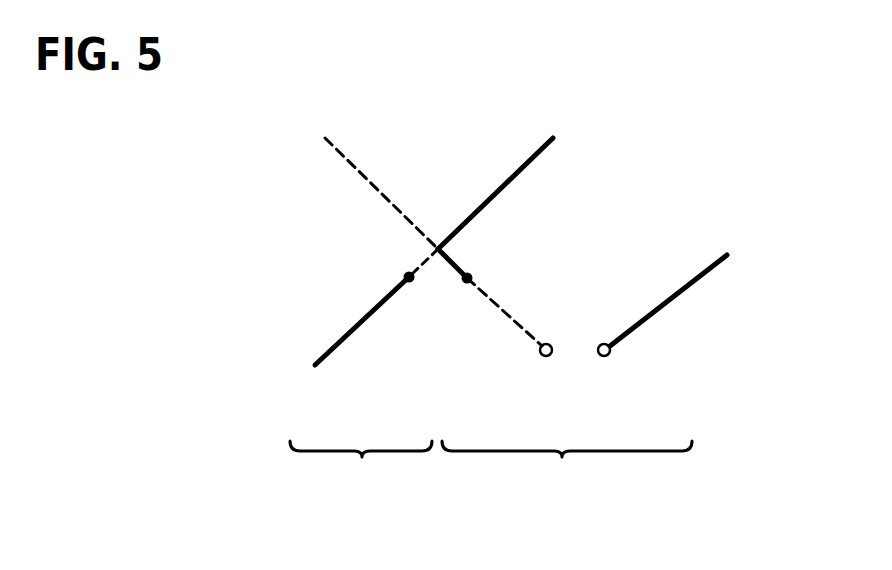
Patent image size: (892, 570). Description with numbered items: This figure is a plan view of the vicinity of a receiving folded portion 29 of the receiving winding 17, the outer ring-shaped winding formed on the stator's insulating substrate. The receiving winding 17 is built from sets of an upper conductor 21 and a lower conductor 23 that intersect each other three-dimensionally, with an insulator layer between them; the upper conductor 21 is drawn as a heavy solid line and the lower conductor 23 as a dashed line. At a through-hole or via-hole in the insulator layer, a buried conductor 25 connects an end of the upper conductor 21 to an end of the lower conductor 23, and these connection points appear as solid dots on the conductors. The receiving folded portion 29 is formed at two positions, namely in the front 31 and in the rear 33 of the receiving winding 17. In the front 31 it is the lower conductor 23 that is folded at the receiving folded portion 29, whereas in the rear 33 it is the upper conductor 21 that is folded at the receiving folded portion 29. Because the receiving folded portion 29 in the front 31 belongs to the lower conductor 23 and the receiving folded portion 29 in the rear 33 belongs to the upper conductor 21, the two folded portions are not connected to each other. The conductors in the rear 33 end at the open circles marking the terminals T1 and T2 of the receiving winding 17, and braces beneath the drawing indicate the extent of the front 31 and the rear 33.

The receiving winding 17 is at (731, 100).
The upper conductor 21 is at (516, 171).
The lower conductor 23 is at (352, 166).
The buried conductor 25 is at (403, 277).
The receiving folded portion 29 is at (438, 250).
The terminal T1 is at (548, 357).
The terminal T2 is at (606, 357).
The front 31 is at (361, 466).
The rear 33 is at (567, 466).